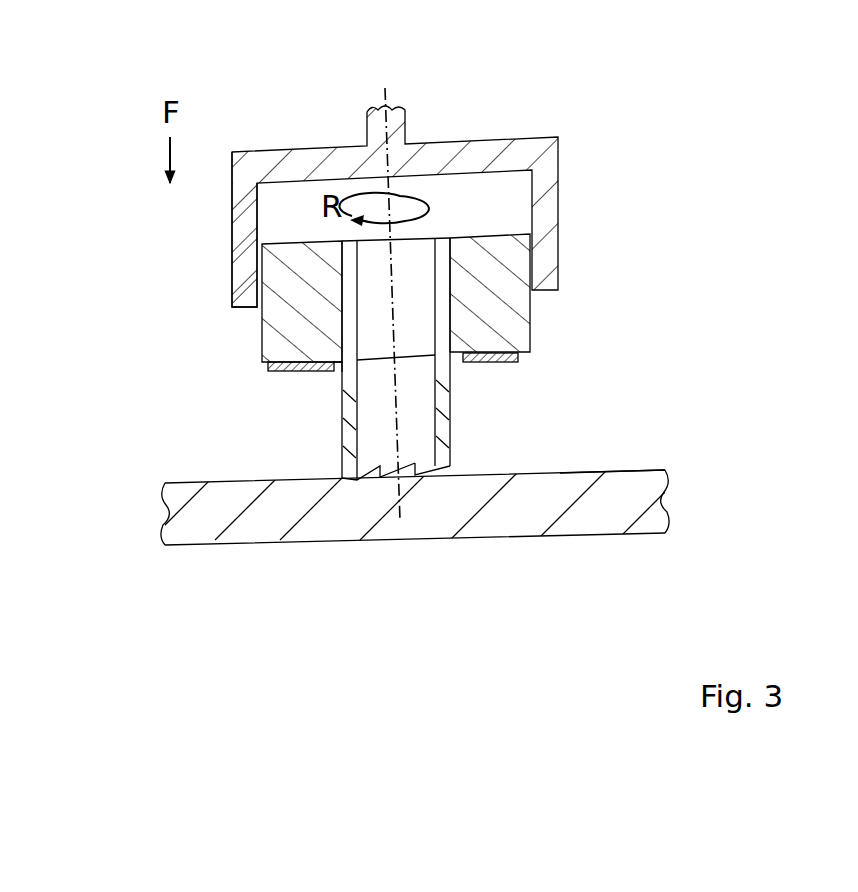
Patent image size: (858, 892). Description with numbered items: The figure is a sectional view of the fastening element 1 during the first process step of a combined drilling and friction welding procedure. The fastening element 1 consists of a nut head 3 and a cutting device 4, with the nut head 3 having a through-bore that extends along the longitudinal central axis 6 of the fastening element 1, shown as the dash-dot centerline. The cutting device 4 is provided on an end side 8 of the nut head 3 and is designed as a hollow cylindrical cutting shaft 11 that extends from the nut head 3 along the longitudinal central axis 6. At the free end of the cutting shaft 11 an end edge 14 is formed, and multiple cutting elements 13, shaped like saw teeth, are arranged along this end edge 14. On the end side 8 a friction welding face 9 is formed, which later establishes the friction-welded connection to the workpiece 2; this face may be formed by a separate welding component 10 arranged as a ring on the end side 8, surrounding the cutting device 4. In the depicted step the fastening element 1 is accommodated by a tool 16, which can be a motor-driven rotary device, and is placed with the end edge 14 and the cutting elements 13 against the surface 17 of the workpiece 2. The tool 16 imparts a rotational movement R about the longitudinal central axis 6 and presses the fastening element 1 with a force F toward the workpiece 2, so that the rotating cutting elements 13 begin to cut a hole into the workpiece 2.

The fastening element 1 is at (172, 275).
The workpiece 2 is at (583, 535).
The nut head 3 is at (528, 317).
The cutting device 4 is at (313, 449).
The longitudinal central axis 6 is at (387, 92).
The end side 8 is at (274, 364).
The friction welding face 9 is at (309, 375).
The welding component 10 is at (513, 363).
The cutting shaft 11 is at (452, 435).
The cutting elements 13 is at (390, 473).
The end edge 14 is at (443, 467).
The tool 16 is at (560, 193).
The surface 17 is at (637, 468).